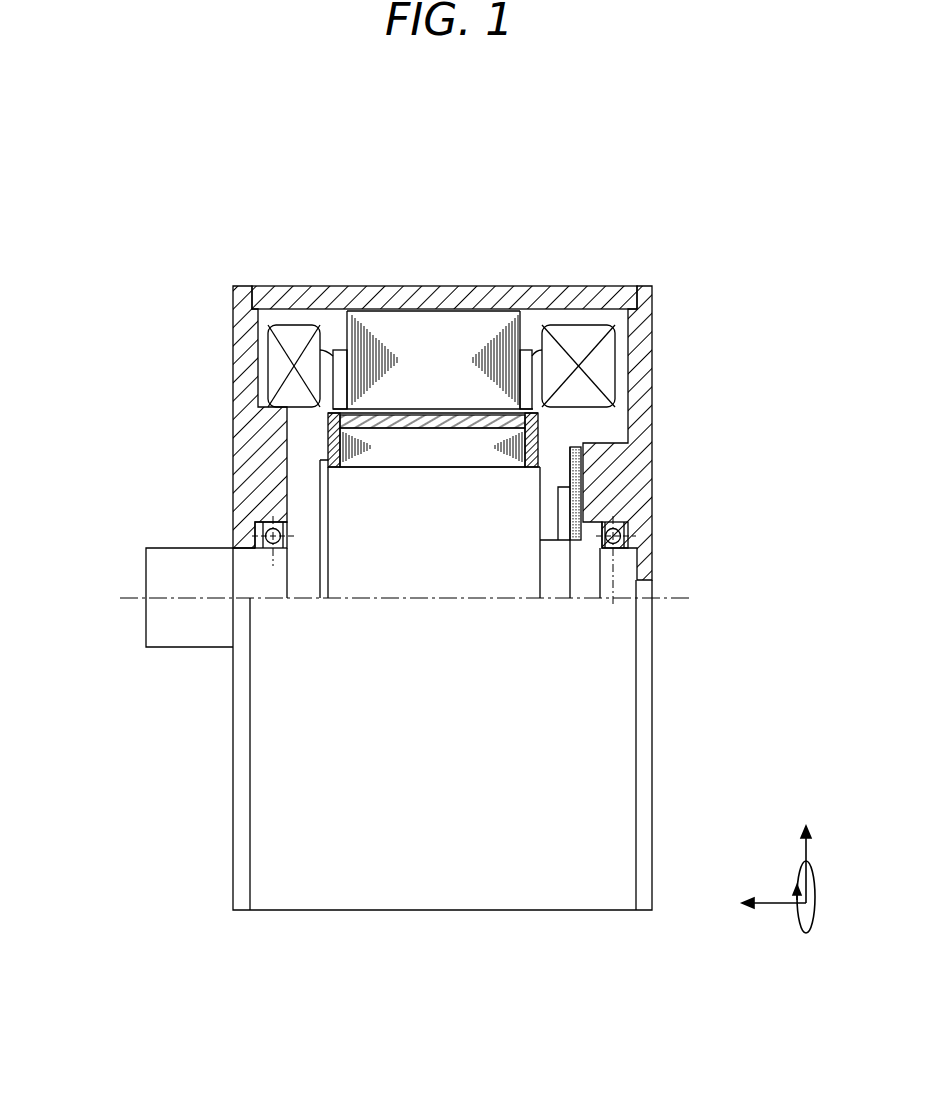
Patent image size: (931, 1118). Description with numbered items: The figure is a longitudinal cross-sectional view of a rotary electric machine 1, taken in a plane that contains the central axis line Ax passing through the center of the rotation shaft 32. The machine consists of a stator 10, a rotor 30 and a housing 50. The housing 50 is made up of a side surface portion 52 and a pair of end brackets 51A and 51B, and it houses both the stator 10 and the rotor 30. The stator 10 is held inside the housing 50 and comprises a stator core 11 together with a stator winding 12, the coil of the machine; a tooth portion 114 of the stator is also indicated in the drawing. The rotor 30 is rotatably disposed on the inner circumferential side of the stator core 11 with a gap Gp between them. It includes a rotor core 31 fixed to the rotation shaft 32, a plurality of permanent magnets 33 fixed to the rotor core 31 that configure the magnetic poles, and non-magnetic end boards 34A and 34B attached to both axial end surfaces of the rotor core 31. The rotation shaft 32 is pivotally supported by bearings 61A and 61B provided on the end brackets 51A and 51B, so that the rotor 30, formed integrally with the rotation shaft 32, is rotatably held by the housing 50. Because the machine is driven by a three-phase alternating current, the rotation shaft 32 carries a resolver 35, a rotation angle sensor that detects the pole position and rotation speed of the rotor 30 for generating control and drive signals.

The rotary electric machine 1 is at (435, 557).
The stator 10 is at (351, 306).
The stator core 11 is at (417, 332).
The tooth 114 is at (350, 411).
The stator winding 12 is at (280, 367).
The rotor 30 is at (548, 443).
The rotor core 31 is at (438, 482).
The rotation shaft 32 is at (158, 572).
The permanent magnets 33 is at (432, 422).
The non-magnetic end board 34A is at (532, 430).
The non-magnetic end board 34B is at (335, 443).
The resolver 35 is at (577, 500).
The housing 50 is at (228, 286).
The end bracket 51A is at (640, 340).
The end bracket 51B is at (245, 437).
The side surface portion 52 is at (272, 288).
The bearing 61A is at (627, 530).
The bearing 61B is at (272, 522).
The gap Gp is at (490, 413).
The central axis line Ax is at (663, 600).